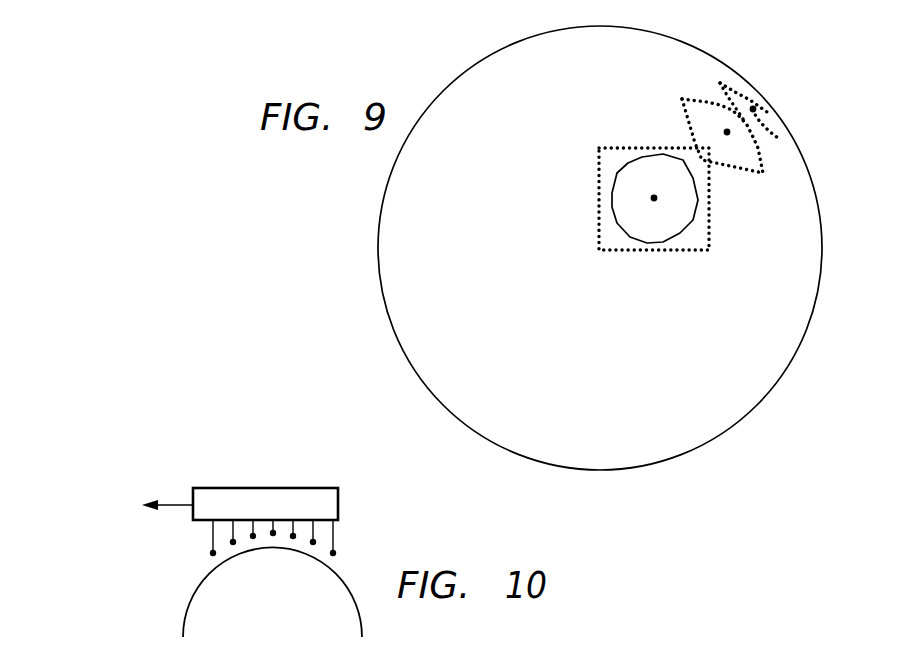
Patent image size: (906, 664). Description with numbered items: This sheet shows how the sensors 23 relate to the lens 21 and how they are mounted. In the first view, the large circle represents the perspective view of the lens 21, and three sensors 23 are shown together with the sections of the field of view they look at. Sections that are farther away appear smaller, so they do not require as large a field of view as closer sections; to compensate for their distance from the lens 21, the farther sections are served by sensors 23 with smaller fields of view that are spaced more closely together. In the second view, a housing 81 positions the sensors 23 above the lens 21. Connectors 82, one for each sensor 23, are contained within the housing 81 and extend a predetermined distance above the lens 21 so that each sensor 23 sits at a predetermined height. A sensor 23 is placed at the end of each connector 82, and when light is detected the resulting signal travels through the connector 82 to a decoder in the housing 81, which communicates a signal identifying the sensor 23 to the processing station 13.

In FIG. 9, the lens 21 is at (467, 67).
In FIG. 10, the lens 21 is at (183, 618).
In FIG. 10, the sensors 23 is at (213, 553).
In FIG. 10, the processing station 13 is at (94, 546).
In FIG. 10, the housing 81 is at (334, 480).
In FIG. 10, the connectors 82 is at (212, 532).